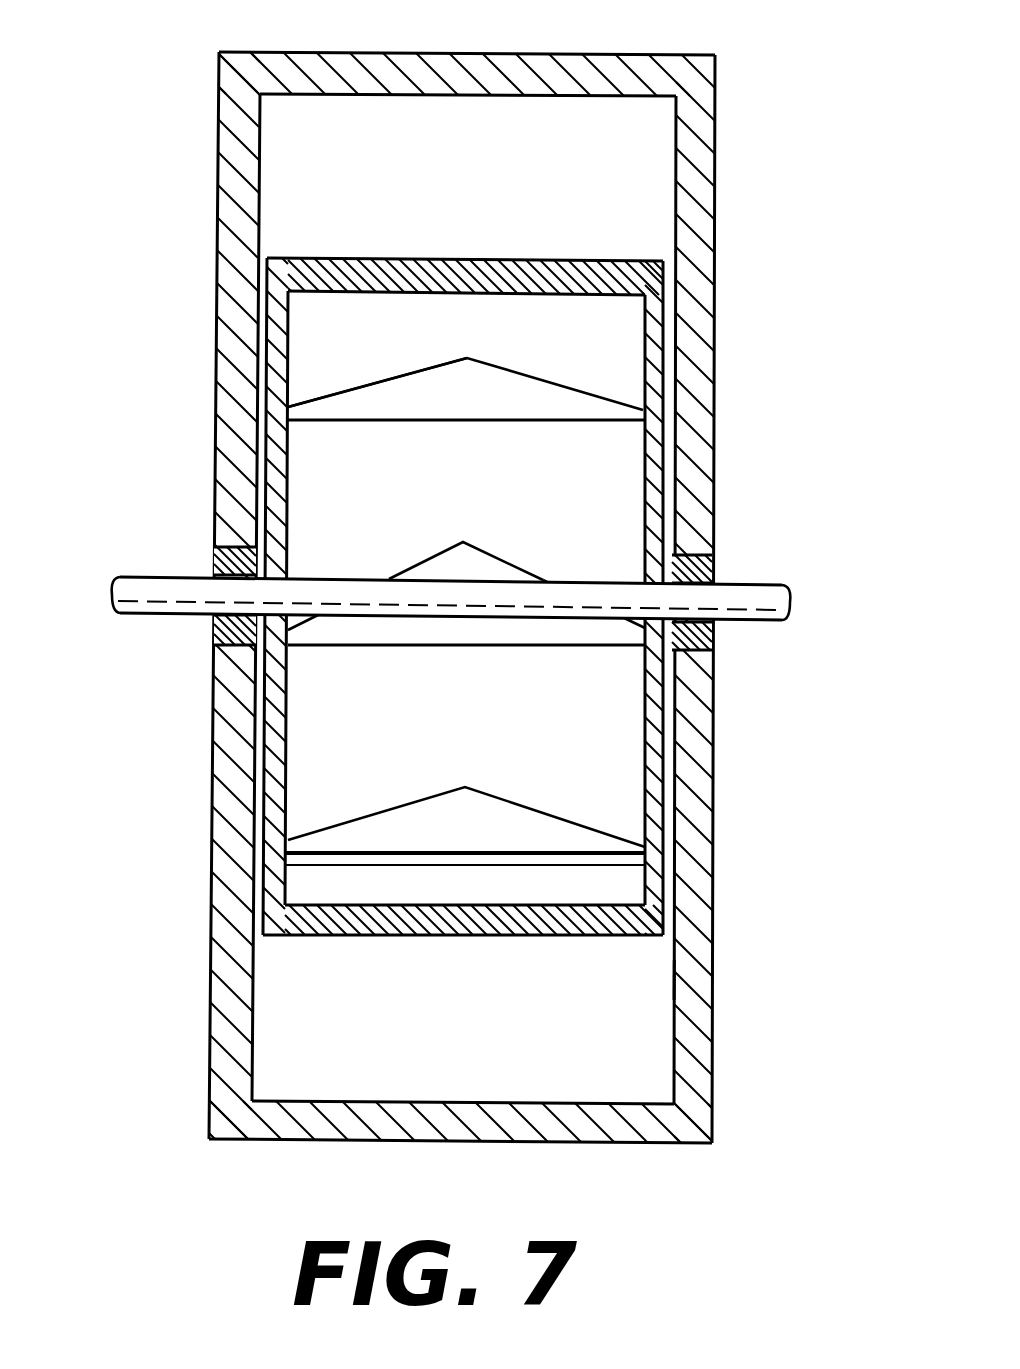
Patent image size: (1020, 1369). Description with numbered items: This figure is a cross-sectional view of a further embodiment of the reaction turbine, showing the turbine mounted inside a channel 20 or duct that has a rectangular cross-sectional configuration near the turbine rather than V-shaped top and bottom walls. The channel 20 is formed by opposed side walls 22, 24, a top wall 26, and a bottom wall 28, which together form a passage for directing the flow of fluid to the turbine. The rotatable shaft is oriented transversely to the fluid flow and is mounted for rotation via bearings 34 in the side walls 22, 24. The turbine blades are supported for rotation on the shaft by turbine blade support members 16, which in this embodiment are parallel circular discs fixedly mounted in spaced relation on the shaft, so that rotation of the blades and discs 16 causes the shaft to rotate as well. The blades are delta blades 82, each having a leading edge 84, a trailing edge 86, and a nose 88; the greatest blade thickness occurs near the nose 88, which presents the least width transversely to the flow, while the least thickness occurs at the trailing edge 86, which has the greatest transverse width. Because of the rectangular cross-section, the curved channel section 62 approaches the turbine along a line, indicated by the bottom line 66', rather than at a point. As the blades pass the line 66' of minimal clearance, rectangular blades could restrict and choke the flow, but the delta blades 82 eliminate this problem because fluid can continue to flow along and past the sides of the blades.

The channel 20 is at (448, 599).
The side wall 22 is at (692, 1037).
The side wall 24 is at (230, 977).
The top wall 26 is at (405, 68).
The bottom wall 28 is at (594, 1125).
The bearings 34 is at (214, 628).
The curved section 62 is at (628, 983).
The bottom line 66' is at (534, 841).
The turbine blade support member 16 is at (287, 490).
The delta blade 82 is at (523, 605).
The leading edge 84 is at (410, 370).
The trailing edge 86 is at (462, 422).
The nose 88 is at (467, 358).